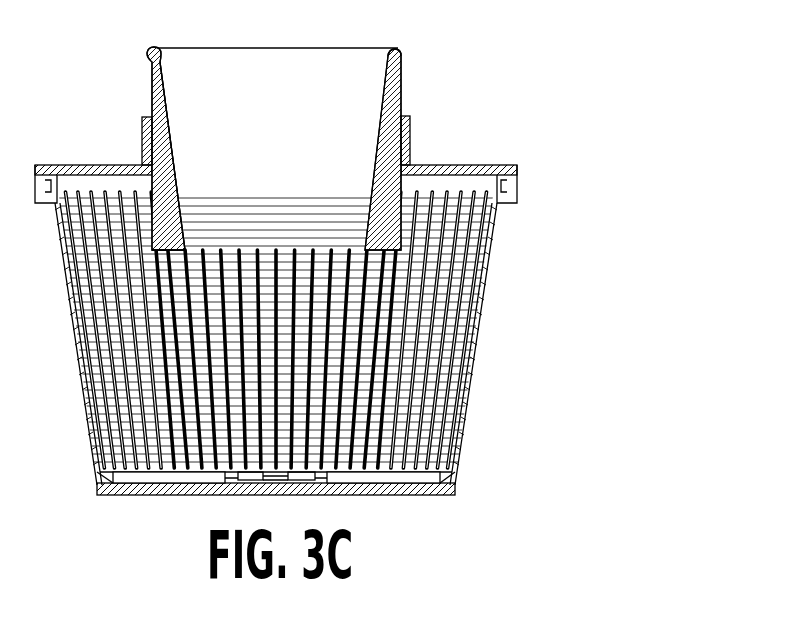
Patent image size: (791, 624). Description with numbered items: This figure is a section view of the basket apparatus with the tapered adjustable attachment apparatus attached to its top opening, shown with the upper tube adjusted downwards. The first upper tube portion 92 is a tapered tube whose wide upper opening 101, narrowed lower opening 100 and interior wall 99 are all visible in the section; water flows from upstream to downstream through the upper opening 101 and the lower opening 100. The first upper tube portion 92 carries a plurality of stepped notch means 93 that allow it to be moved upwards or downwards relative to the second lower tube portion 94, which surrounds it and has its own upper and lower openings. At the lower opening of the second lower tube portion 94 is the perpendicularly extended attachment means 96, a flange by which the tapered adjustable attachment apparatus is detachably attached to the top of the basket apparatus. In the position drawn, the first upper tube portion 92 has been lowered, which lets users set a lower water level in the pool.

The first upper tube portion 92 is at (403, 52).
The stepped notch means 93 is at (152, 103).
The second lower tube portion 94 is at (407, 128).
The perpendicularly extended attachment means 96 is at (478, 170).
The interior wall 99 is at (168, 165).
The narrowed lower opening 100 is at (188, 243).
The wide upper opening 101 is at (157, 60).